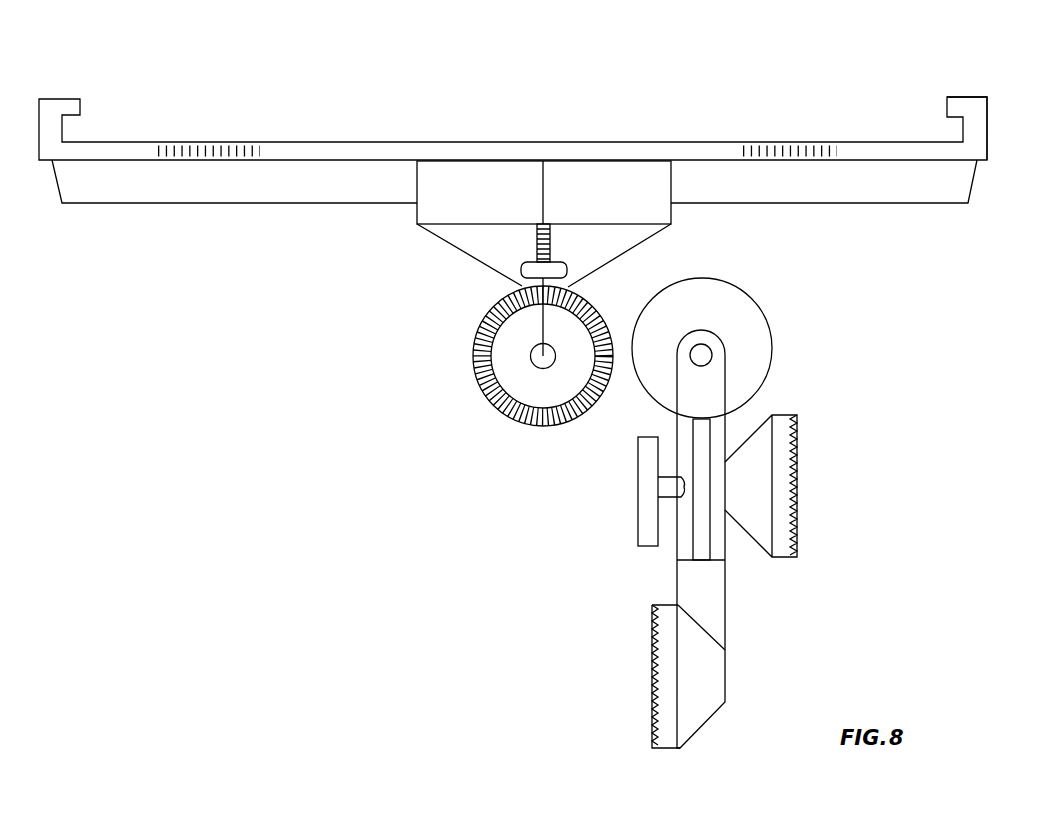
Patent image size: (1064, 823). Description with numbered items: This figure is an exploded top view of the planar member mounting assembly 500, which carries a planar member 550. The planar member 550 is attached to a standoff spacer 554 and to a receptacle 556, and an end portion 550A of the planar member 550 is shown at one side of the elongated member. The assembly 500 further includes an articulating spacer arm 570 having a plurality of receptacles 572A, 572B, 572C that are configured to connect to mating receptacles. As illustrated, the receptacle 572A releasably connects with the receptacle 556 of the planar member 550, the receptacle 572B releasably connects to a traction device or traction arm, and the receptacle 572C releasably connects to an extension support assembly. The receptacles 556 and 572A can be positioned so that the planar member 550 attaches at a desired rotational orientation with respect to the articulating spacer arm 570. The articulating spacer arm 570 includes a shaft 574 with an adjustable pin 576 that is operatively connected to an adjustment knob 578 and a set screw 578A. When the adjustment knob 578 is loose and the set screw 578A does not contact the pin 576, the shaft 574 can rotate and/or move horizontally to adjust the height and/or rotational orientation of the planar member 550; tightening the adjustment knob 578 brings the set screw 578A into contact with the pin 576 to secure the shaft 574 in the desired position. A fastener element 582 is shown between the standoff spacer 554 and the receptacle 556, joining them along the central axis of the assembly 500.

The planar member mounting assembly 500 is at (928, 265).
The planar member 550 is at (710, 142).
The rail end flange 550A is at (964, 82).
The standoff spacer 554 is at (430, 203).
The receptacle 556 is at (505, 368).
The articulating spacer arm 570 is at (743, 498).
The receptacle 572A is at (762, 312).
The receptacle 572B is at (797, 488).
The receptacle 572C is at (652, 693).
The shaft 574 is at (727, 590).
The adjustable pin 576 is at (692, 532).
The adjustment knob 578 is at (638, 488).
The set screw 578A is at (684, 497).
The adjustment nut 582 is at (520, 272).